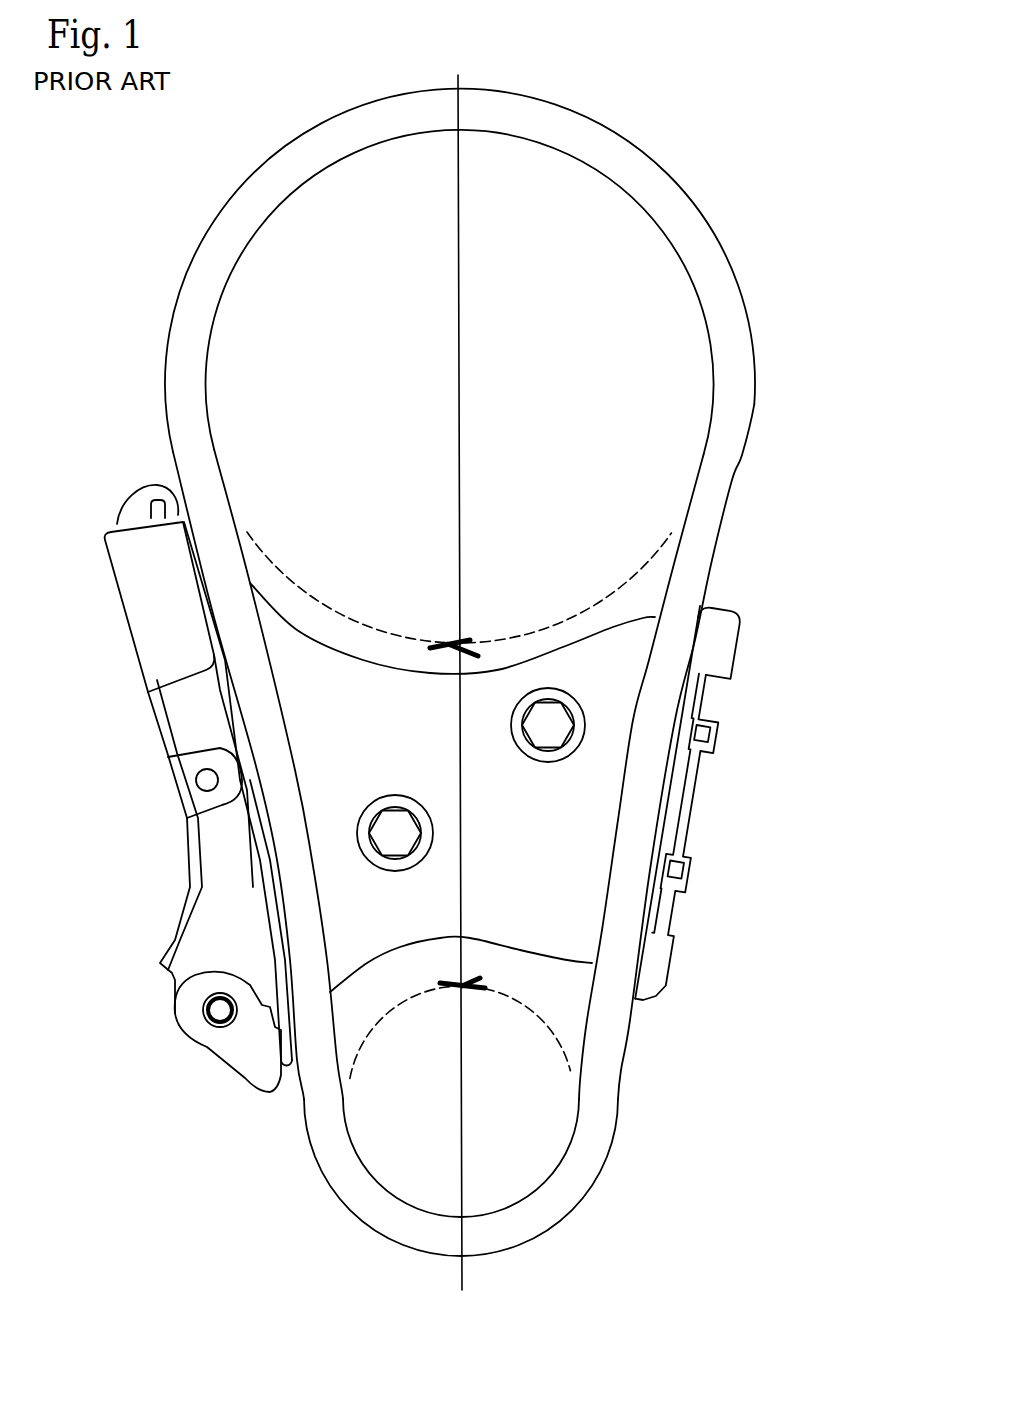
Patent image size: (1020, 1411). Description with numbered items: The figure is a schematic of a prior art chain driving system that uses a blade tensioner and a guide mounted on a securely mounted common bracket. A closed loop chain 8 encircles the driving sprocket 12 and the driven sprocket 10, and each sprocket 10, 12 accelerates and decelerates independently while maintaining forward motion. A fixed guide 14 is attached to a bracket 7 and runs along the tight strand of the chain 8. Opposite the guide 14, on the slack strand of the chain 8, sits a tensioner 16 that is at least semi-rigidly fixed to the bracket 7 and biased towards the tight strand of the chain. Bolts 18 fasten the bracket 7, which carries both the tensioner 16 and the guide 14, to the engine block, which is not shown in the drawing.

The bracket 7 is at (390, 907).
The chain 8 is at (542, 128).
The driven sprocket 10 is at (595, 253).
The driving sprocket 12 is at (542, 1152).
The fixed guide 14 is at (713, 638).
The tensioner 16 is at (220, 922).
The bolts 18 is at (535, 762).